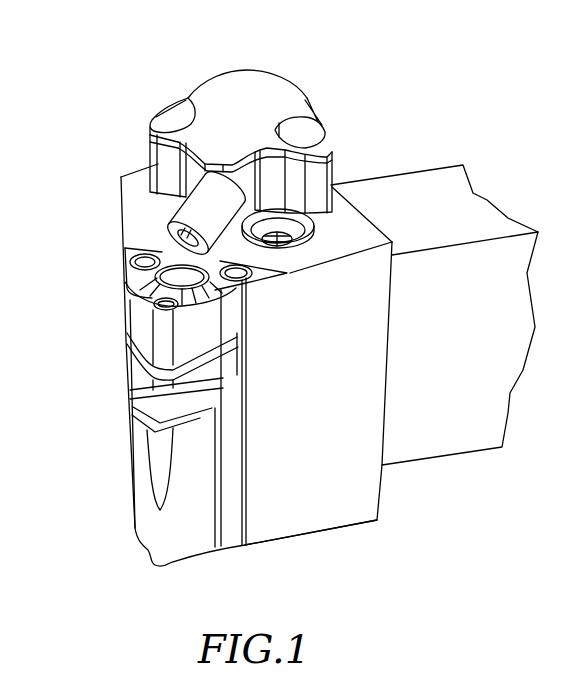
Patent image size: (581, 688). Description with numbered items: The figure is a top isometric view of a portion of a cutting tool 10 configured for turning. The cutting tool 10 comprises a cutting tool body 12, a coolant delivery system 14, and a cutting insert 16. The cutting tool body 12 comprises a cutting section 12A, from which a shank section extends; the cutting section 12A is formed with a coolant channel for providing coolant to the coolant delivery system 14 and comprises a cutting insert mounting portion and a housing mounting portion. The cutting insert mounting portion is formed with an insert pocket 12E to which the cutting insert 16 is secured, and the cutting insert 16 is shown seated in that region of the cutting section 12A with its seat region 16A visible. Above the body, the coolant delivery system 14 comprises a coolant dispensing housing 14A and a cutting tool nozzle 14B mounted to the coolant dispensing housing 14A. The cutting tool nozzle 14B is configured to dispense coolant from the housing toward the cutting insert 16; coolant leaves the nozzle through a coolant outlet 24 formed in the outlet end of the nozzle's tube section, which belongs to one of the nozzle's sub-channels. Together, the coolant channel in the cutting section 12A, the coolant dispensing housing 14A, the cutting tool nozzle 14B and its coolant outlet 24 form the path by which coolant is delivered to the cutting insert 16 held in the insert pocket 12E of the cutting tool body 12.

The cutting tool 10 is at (382, 62).
The cutting tool body 12 is at (352, 558).
The cutting section 12A is at (280, 546).
The insert pocket 12E is at (285, 271).
The coolant delivery system 14 is at (155, 80).
The coolant dispensing housing 14A is at (272, 90).
The cutting tool nozzle 14B is at (170, 198).
The coolant outlet 24 is at (165, 226).
The cutting insert 16 is at (130, 309).
The insert seat plate 16A is at (145, 325).